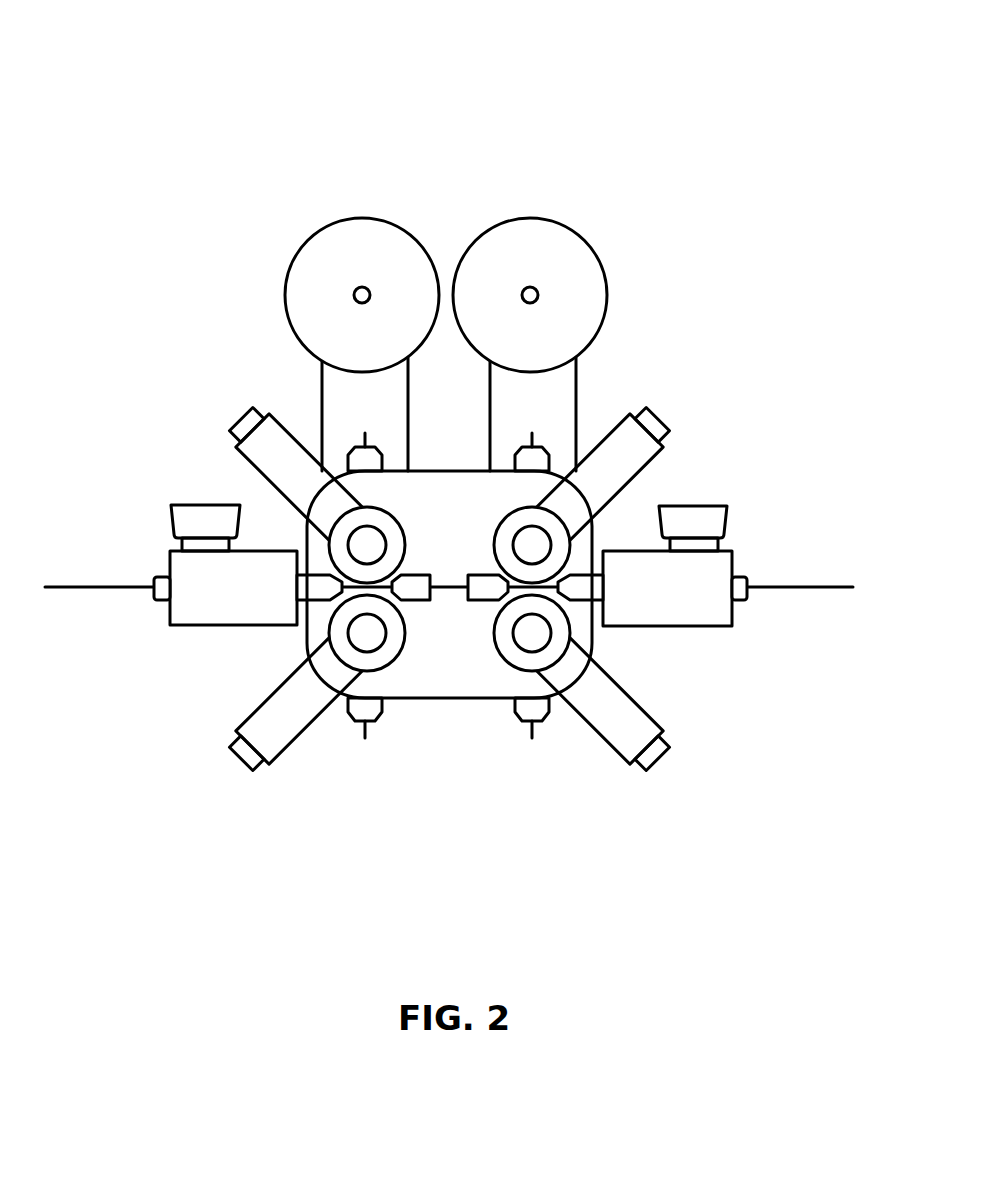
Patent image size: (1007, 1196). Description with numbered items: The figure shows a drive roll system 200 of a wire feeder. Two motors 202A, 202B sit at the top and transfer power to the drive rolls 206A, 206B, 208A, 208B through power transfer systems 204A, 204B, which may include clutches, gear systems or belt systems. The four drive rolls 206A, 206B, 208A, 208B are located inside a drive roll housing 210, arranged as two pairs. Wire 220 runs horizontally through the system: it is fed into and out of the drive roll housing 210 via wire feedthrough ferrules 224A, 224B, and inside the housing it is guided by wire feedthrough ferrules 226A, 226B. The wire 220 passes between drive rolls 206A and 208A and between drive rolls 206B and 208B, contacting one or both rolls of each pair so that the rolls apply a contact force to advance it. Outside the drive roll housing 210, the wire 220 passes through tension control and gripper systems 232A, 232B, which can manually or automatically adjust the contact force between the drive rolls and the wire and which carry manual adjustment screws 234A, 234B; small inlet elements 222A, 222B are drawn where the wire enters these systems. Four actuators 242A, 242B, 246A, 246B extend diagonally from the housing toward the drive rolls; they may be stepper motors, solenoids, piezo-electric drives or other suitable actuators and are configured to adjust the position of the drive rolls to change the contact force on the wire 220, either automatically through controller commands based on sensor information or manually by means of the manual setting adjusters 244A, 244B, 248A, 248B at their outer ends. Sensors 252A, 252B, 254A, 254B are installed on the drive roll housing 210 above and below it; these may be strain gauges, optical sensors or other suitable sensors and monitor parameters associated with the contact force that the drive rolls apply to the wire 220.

The drive roll system 200 is at (248, 86).
The motor 202A is at (318, 230).
The motor 202B is at (574, 230).
The power transfer system 204A is at (321, 397).
The power transfer system 204B is at (577, 397).
The drive roll 206A is at (390, 513).
The drive roll 206B is at (498, 522).
The drive roll 208A is at (402, 642).
The drive roll 208B is at (504, 656).
The drive roll housing 210 is at (478, 469).
The wire 220 is at (98, 587).
The first inlet guide 222A is at (163, 576).
The second inlet guide 222B is at (742, 576).
The wire feedthrough ferrule 224A is at (320, 574).
The wire feedthrough ferrule 224B is at (579, 574).
The wire feedthrough ferrule 226A is at (402, 574).
The wire feedthrough ferrule 226B is at (497, 600).
The tension control and gripper system 232A is at (205, 627).
The tension control and gripper system 232B is at (692, 627).
The manual adjustment screw 234A is at (200, 505).
The manual adjustment screw 234B is at (698, 505).
The actuator 242A is at (240, 452).
The actuator 242B is at (660, 452).
The manual setting adjuster 244A is at (246, 418).
The manual setting adjuster 244B is at (647, 418).
The actuator 246A is at (257, 704).
The actuator 246B is at (638, 705).
The manual setting adjuster 248A is at (241, 752).
The manual setting adjuster 248B is at (659, 754).
The sensor 252A is at (380, 440).
The sensor 252B is at (518, 452).
The sensor 254A is at (371, 726).
The sensor 254B is at (524, 724).